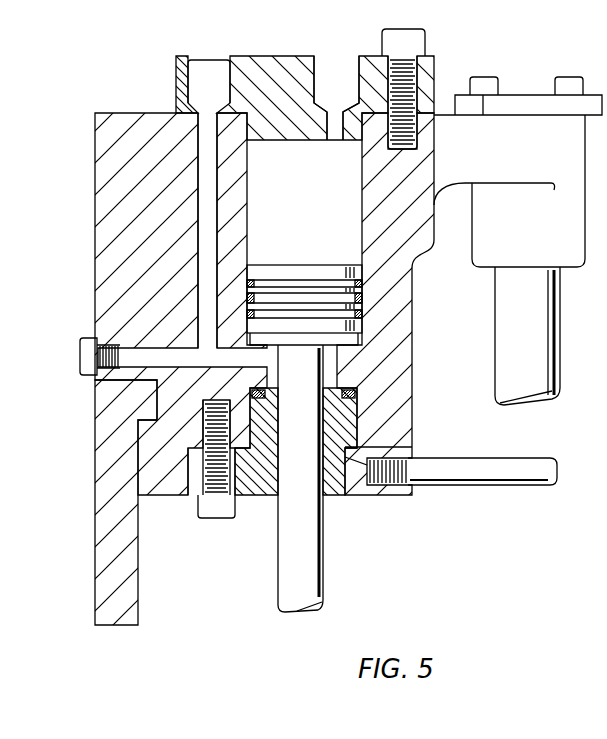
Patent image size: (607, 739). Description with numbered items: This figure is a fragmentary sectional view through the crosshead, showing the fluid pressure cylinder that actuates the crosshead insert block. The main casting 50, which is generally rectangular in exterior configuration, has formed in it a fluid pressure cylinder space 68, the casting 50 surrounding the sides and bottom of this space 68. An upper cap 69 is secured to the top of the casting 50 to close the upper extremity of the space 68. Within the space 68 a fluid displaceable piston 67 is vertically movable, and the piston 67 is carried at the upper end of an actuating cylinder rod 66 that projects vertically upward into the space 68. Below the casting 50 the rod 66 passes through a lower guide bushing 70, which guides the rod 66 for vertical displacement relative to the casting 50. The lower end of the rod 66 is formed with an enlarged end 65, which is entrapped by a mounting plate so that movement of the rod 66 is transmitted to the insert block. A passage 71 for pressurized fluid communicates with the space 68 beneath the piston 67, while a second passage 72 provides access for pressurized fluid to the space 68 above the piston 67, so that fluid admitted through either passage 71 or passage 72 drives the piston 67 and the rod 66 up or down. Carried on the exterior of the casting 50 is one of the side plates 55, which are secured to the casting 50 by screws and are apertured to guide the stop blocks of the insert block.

The main casting 50 is at (438, 114).
The side plates 55 is at (97, 510).
The enlarged end 65 is at (60, 342).
The actuating cylinder rod 66 is at (305, 580).
The fluid displaceable piston 67 is at (302, 265).
The fluid pressure cylinder space 68 is at (362, 205).
The upper cap 69 is at (262, 64).
The lower guide bushing 70 is at (333, 492).
The passage 71 is at (207, 201).
The second passage 72 is at (314, 70).